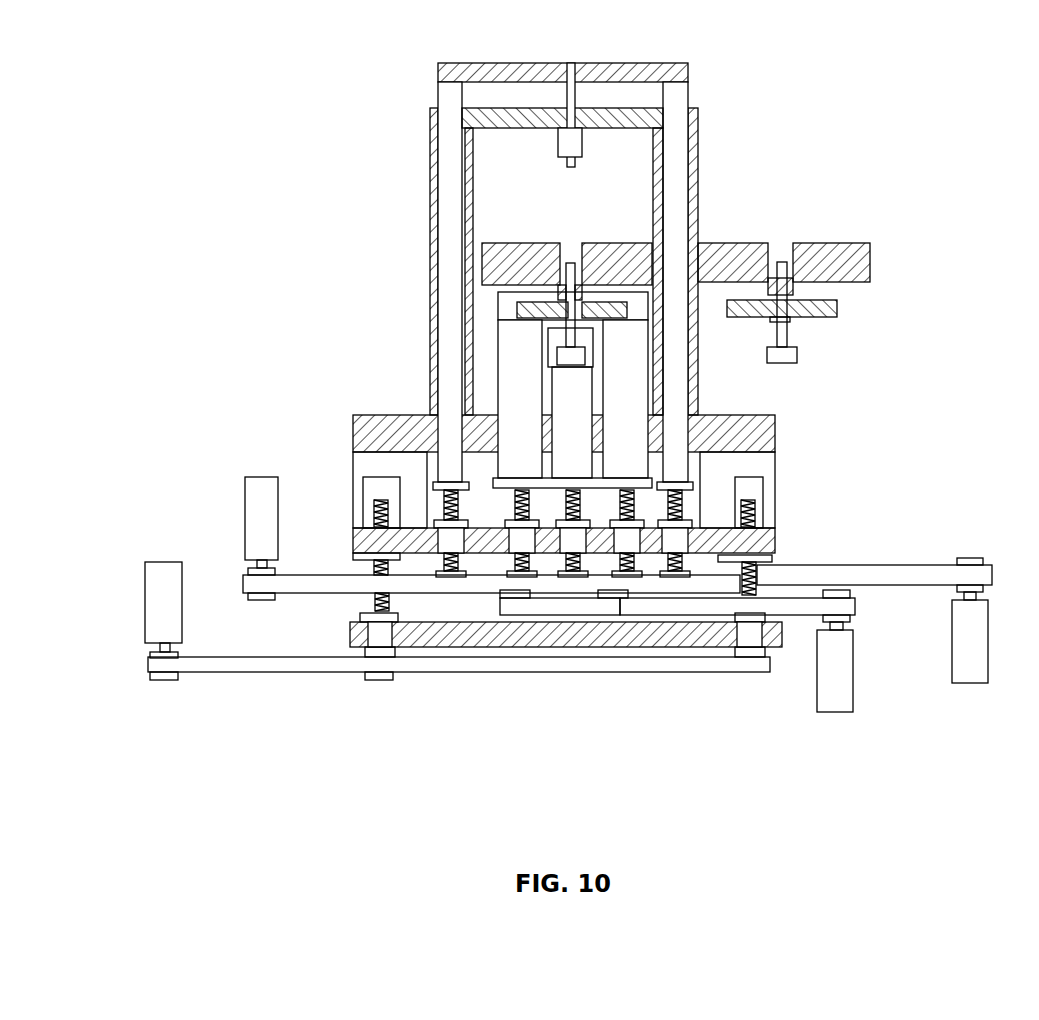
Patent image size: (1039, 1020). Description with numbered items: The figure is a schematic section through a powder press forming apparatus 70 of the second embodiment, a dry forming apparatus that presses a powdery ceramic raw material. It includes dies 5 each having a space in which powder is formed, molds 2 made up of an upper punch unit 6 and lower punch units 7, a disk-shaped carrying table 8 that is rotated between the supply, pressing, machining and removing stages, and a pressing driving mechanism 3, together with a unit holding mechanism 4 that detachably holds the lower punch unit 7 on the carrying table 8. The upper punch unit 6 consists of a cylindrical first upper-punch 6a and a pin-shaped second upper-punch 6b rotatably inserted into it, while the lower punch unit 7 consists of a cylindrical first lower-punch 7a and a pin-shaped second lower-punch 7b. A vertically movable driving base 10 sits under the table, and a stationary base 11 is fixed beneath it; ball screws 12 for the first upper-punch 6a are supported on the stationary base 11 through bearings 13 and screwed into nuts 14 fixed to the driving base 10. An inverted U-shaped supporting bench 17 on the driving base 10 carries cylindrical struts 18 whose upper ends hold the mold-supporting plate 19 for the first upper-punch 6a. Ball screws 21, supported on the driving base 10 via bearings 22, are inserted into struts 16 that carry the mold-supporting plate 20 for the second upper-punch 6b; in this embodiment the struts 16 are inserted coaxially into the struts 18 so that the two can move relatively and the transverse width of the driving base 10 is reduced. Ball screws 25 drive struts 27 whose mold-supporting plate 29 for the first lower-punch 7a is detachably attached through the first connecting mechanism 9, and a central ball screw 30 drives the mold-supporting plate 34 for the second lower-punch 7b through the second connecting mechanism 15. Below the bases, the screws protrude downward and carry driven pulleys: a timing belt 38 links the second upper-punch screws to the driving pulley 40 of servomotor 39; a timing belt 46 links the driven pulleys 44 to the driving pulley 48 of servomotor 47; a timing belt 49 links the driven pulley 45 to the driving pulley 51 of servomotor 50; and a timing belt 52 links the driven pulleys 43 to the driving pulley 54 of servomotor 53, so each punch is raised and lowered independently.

The mold 2 is at (579, 190).
The pressing driving mechanism 3 is at (821, 746).
The unit holding mechanism 4 is at (793, 287).
The die 5 is at (536, 243).
The upper punch unit 6 is at (537, 129).
The first upper-punch 6a is at (566, 147).
The second upper-punch 6b is at (568, 168).
The lower punch unit 7 is at (714, 283).
The first lower-punch 7a is at (582, 300).
The second lower-punch 7b is at (571, 262).
The carrying table 8 is at (856, 243).
The first connecting mechanism 9 is at (486, 297).
The driving base 10 is at (353, 526).
The stationary base 11 is at (450, 646).
The ball screw 12 is at (376, 606).
The bearing 13 is at (375, 640).
The nut 14 is at (353, 546).
The second connecting mechanism 15 is at (490, 374).
The strut 16 is at (438, 98).
The supporting bench 17 is at (353, 432).
The strut 18 is at (430, 172).
The mold-supporting plate 19 is at (510, 108).
The mold-supporting plate 20 is at (440, 63).
The ball screw 21 is at (700, 500).
The bearing 22 is at (446, 562).
The ball screw 25 is at (520, 566).
The strut 27 is at (498, 346).
The mold-supporting plate 29 is at (540, 322).
The ball screw 30 is at (540, 615).
The mold-supporting plate 34 is at (593, 350).
The timing belt 38 is at (300, 593).
The servomotor 39 is at (250, 478).
The driving pulley 40 is at (256, 600).
The driven pulley 43 is at (378, 680).
The driven pulley 44 is at (515, 598).
The driven pulley 45 is at (573, 566).
The timing belt 46 is at (762, 615).
The servomotor 47 is at (853, 672).
The driving pulley 48 is at (850, 593).
The timing belt 49 is at (918, 565).
The servomotor 50 is at (952, 672).
The driving pulley 51 is at (975, 558).
The timing belt 52 is at (232, 672).
The servomotor 53 is at (155, 562).
The driving pulley 54 is at (160, 680).
The powder press forming apparatus 70 is at (849, 90).